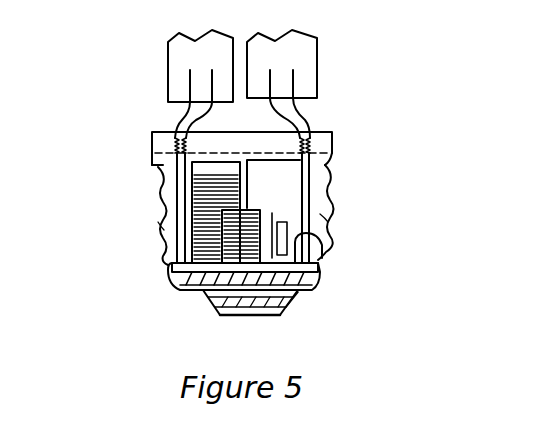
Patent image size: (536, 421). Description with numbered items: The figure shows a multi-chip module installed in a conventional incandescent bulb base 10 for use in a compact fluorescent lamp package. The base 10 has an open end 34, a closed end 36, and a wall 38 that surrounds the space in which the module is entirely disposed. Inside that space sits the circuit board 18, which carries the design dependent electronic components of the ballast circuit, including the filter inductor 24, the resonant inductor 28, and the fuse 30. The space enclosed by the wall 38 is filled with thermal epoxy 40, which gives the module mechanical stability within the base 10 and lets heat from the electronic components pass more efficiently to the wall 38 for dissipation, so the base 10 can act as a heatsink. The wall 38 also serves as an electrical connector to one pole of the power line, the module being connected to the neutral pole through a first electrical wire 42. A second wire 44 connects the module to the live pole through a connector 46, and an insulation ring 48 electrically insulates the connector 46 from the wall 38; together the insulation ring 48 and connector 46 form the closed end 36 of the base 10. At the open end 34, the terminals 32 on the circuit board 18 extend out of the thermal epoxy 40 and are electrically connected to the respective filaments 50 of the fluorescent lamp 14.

The base 10 is at (330, 163).
The fluorescent lamp 14 is at (313, 40).
The circuit board 18 is at (170, 270).
The filter inductor 24 is at (287, 166).
The resonant inductor 28 is at (205, 165).
The fuse 30 is at (277, 218).
The terminals 32 is at (175, 204).
The open end 34 is at (152, 132).
The closed end 36 is at (293, 303).
The wall 38 is at (158, 242).
The thermal epoxy 40 is at (157, 167).
The first electrical wire 42 is at (320, 218).
The second wire 44 is at (325, 250).
The connector 46 is at (220, 317).
The insulation ring 48 is at (300, 288).
The filaments 50 is at (170, 112).